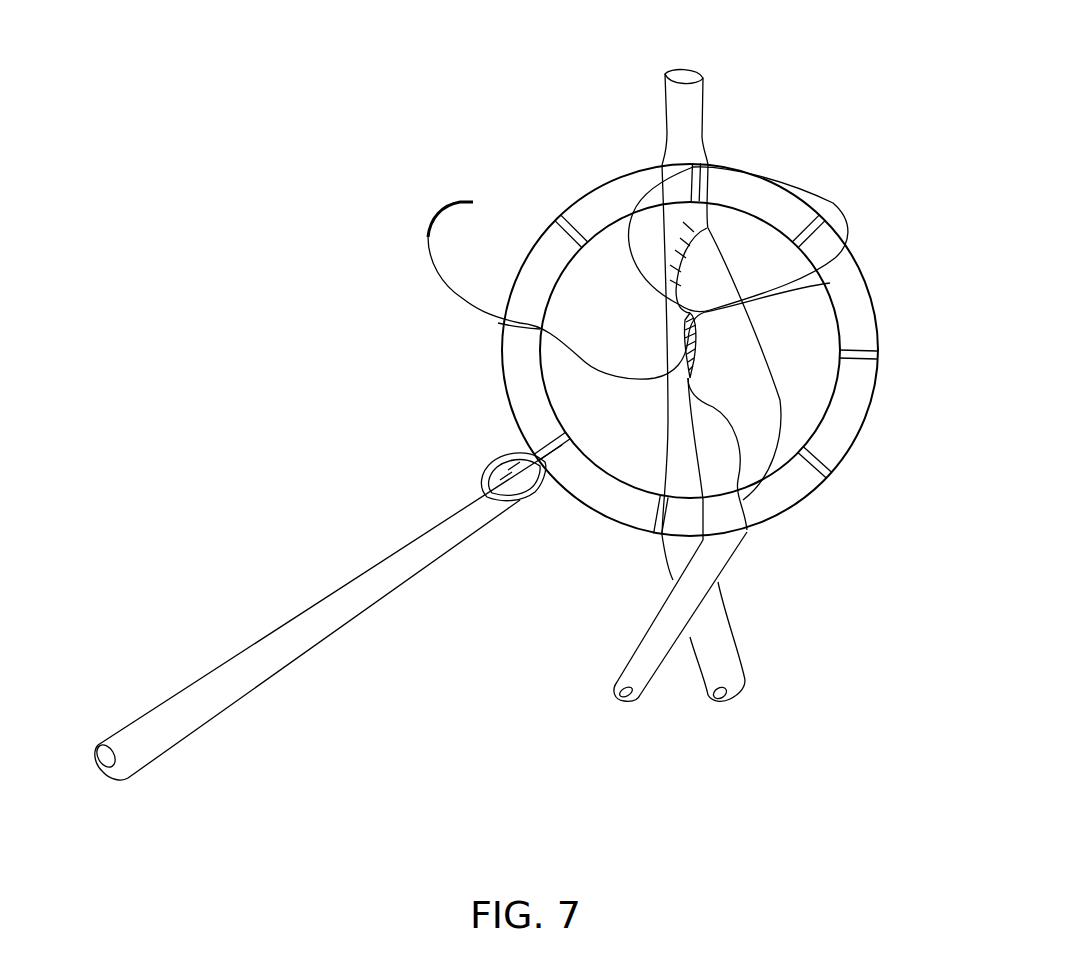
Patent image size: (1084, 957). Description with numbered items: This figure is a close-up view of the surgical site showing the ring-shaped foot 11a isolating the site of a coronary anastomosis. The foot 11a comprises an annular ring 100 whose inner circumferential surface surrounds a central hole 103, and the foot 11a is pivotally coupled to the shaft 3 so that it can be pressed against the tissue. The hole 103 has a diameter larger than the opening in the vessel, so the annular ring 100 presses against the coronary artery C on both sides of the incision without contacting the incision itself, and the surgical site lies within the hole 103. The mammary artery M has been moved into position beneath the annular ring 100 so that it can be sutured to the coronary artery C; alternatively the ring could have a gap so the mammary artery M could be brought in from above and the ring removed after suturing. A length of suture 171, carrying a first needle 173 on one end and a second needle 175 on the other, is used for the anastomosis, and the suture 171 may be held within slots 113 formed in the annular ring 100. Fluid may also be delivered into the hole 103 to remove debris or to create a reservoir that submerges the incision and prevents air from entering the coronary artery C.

The foot 11a is at (607, 108).
The annular ring 100 is at (860, 432).
The slots 113 is at (830, 472).
The hole 103 is at (803, 372).
The suture 171 is at (832, 203).
The second needle 175 is at (830, 283).
The first needle 173 is at (458, 296).
The shaft 3 is at (355, 558).
The coronary artery C is at (704, 110).
The mammary artery M is at (732, 570).